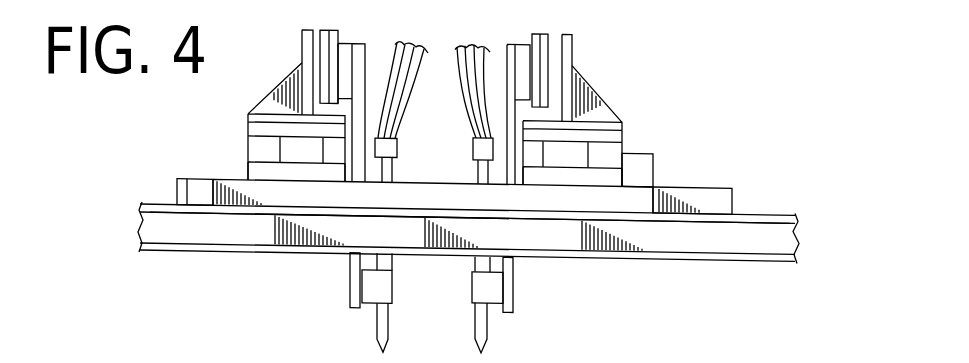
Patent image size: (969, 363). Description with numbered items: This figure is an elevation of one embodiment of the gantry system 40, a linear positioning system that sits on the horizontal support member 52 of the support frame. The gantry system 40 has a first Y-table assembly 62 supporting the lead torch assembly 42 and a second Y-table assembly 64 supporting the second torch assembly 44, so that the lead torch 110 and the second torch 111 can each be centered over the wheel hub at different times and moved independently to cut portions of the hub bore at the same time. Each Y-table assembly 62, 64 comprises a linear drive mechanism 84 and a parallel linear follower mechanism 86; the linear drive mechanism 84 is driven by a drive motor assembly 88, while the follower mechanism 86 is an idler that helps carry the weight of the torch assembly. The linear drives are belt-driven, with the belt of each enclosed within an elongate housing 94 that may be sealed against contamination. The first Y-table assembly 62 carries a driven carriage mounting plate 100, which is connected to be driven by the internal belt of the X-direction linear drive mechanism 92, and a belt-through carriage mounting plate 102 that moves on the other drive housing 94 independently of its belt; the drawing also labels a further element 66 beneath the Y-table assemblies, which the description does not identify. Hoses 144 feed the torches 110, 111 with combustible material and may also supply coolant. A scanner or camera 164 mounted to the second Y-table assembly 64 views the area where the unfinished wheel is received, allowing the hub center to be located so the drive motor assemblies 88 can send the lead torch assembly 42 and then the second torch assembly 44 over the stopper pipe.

The gantry system 40 is at (733, 181).
The lead torch assembly 42 is at (341, 307).
The second torch assembly 44 is at (538, 310).
The horizontal support member 52 is at (687, 227).
The first Y-table assembly 62 is at (258, 143).
The second Y-table assembly 64 is at (603, 145).
The mounting layer 66 is at (267, 198).
The linear drive mechanism 84 is at (268, 153).
The linear follower mechanism 86 is at (338, 153).
The drive motor assembly 88 is at (197, 186).
The X-direction linear drive mechanism 92 is at (700, 187).
The elongate housing 94 is at (718, 198).
The driven carriage mounting plate 100 is at (250, 171).
The belt-through carriage mounting plate 102 is at (612, 168).
The lead torch 110 is at (373, 333).
The second torch 111 is at (483, 334).
The hoses 144 is at (457, 62).
The scanner or camera 164 is at (637, 168).